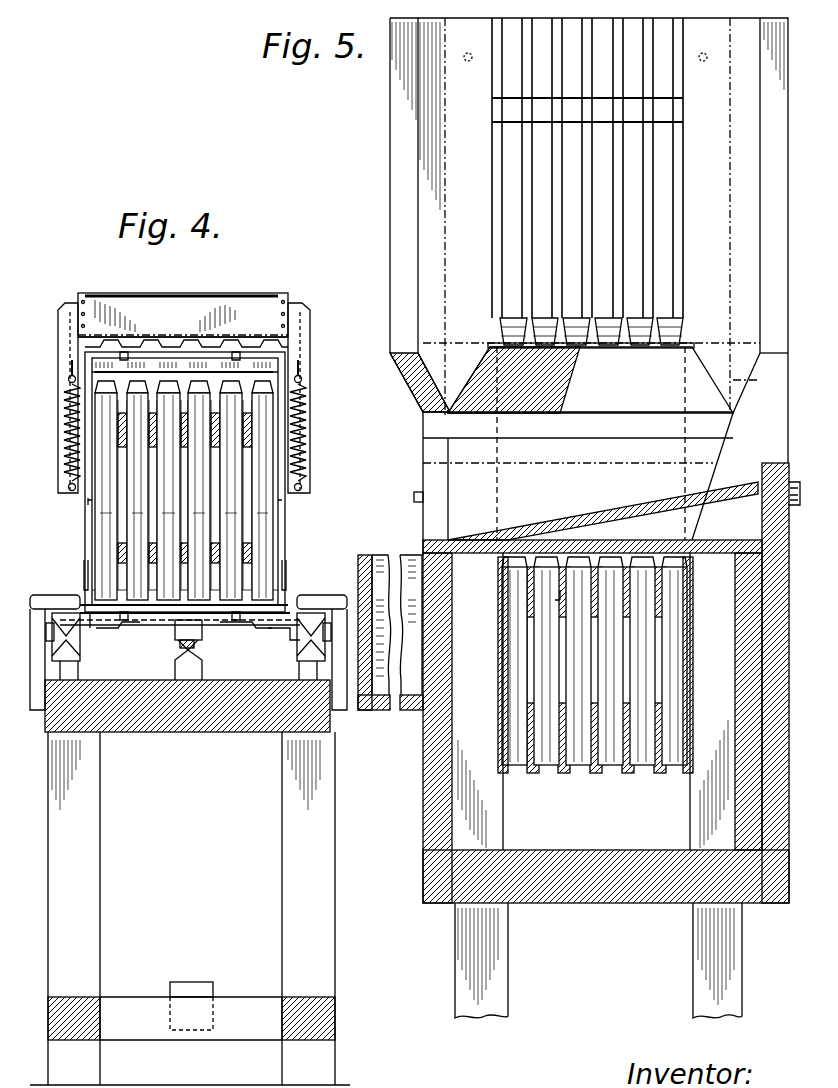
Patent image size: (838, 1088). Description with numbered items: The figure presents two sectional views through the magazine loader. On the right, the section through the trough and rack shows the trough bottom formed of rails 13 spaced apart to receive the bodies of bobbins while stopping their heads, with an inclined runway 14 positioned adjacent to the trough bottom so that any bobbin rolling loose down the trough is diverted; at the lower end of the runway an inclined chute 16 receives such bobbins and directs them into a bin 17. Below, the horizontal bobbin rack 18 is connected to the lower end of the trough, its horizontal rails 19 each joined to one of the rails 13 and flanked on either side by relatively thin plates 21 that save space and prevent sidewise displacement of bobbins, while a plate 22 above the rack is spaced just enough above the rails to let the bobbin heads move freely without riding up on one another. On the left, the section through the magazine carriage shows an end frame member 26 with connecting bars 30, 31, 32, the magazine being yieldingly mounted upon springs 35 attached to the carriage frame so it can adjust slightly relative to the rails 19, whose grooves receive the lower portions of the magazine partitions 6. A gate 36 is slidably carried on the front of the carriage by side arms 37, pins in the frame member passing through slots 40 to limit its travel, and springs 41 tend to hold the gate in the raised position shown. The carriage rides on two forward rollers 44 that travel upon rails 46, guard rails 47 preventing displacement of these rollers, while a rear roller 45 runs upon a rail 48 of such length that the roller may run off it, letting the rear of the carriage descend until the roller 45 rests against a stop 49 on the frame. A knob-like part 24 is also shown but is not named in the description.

In FIG. 4, the partitions 6 is at (260, 386).
In FIG. 5, the rails 13 is at (590, 214).
In FIG. 5, the inclined runway 14 is at (590, 378).
In FIG. 5, the inclined chute 16 is at (603, 515).
In FIG. 5, the bin 17 is at (378, 556).
In FIG. 5, the horizontal bobbin rack 18 is at (606, 740).
In FIG. 4, the horizontal rails 19 is at (245, 462).
In FIG. 5, the horizontal rails 19 is at (596, 620).
In FIG. 4, the thin plates 21 is at (272, 512).
In FIG. 5, the thin plates 21 is at (688, 660).
In FIG. 5, the plate 22 is at (653, 548).
In FIG. 5, the knob 24 is at (795, 507).
In FIG. 4, the end frame member 26 is at (296, 540).
In FIG. 4, the connecting bar 30 is at (290, 632).
In FIG. 4, the connecting bar 31 is at (96, 632).
In FIG. 4, the connecting bar 32 is at (218, 630).
In FIG. 4, the springs 35 is at (222, 350).
In FIG. 4, the gate 36 is at (245, 332).
In FIG. 4, the side arms 37 is at (62, 414).
In FIG. 4, the slots 40 is at (64, 356).
In FIG. 4, the springs 41 is at (69, 380).
In FIG. 4, the rollers 44 is at (58, 618).
In FIG. 4, the roller 45 is at (184, 658).
In FIG. 4, the rails 46 is at (70, 690).
In FIG. 4, the guard rails 47 is at (82, 588).
In FIG. 4, the rail 48 is at (186, 660).
In FIG. 4, the stop 49 is at (188, 982).